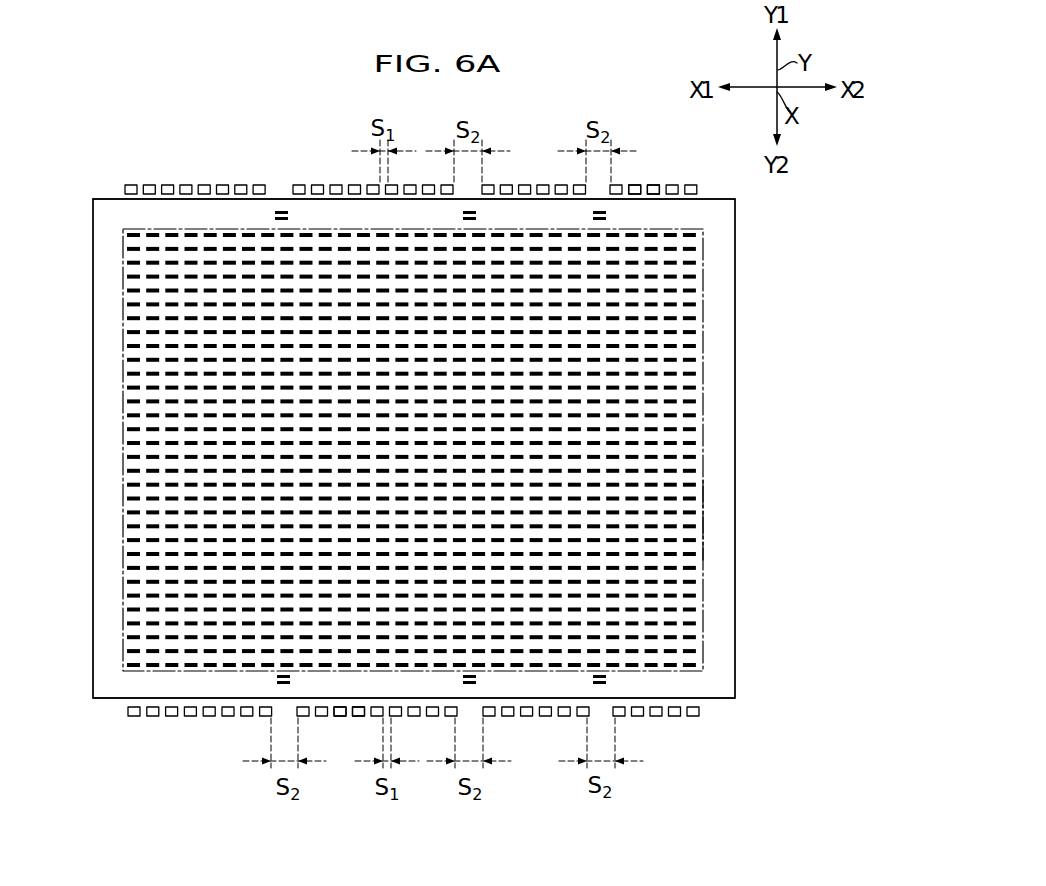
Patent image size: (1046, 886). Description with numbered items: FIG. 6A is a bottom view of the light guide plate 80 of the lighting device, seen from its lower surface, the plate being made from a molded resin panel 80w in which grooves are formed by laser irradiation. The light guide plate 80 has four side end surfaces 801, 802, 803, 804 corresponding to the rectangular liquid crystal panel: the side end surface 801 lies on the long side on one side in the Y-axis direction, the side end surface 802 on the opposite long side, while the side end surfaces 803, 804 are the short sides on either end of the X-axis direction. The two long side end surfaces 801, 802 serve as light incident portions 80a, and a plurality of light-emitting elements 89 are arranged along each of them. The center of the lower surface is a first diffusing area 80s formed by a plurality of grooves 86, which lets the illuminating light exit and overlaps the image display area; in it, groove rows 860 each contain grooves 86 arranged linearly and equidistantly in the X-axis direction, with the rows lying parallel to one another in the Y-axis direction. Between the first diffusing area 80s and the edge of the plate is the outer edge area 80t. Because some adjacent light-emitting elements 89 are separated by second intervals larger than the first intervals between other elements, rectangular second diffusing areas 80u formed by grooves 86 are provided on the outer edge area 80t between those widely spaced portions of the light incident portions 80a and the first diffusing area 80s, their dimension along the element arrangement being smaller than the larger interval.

The light guide plate 80 is at (480, 448).
The resin panel 80w is at (740, 317).
The light incident portion 80a is at (457, 437).
The side end surface 801 is at (308, 199).
The side end surface 802 is at (675, 699).
The side end surface 803 is at (92, 403).
The side end surface 804 is at (736, 372).
The outer edge area 80t is at (720, 440).
The first diffusing area 80s is at (706, 498).
The second diffusing area 80u is at (258, 215).
The groove 86 is at (375, 457).
The groove row 860 is at (514, 232).
The light-emitting element 89 is at (638, 183).